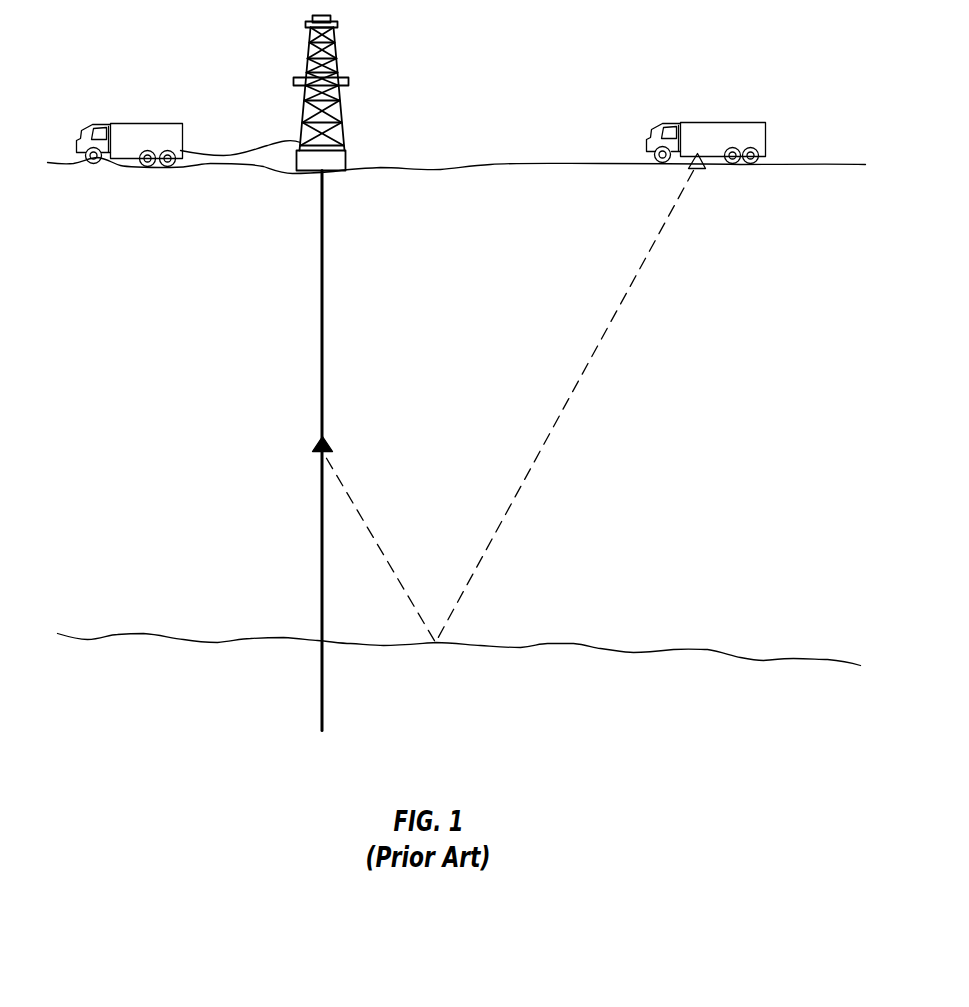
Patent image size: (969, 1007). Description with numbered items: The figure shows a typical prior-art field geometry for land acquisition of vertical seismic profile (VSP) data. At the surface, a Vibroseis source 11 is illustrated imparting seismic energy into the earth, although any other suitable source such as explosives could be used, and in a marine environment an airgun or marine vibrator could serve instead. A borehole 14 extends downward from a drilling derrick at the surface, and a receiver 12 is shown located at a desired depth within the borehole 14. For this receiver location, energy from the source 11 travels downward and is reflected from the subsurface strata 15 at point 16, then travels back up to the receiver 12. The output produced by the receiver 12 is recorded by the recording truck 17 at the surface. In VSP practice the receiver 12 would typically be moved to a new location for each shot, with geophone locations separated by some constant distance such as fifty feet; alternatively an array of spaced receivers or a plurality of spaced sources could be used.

The Vibroseis source 11 is at (715, 122).
The receiver 12 is at (331, 446).
The borehole 14 is at (323, 292).
The subsurface strata 15 is at (576, 642).
The reflection point 16 is at (437, 645).
The recording truck 17 is at (143, 122).